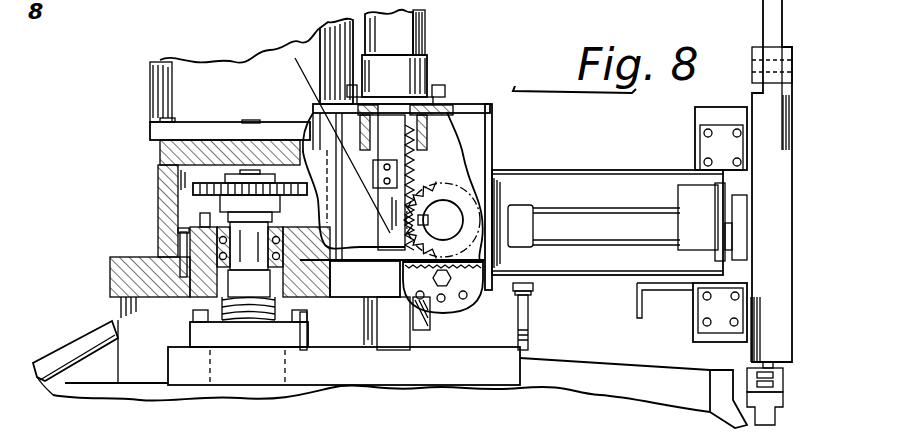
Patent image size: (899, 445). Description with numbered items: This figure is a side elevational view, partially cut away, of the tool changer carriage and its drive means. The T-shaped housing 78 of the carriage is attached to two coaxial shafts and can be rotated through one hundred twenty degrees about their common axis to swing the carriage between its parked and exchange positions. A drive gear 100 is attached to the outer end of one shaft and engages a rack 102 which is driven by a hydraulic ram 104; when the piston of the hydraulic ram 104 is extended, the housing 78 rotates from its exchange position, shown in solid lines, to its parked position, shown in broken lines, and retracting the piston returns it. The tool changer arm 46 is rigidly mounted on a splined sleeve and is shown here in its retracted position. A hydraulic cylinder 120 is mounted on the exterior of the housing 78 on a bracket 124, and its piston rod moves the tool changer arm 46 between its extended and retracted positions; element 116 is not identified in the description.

The hydraulic ram 104 is at (297, 58).
The T-shaped housing 78 is at (415, 63).
The drive gear 100 is at (415, 243).
The rack 102 is at (412, 175).
The hydraulic cylinder 120 is at (630, 200).
The bracket 124 is at (715, 256).
The plate 116 is at (738, 248).
The tool changer arm 46 is at (777, 206).